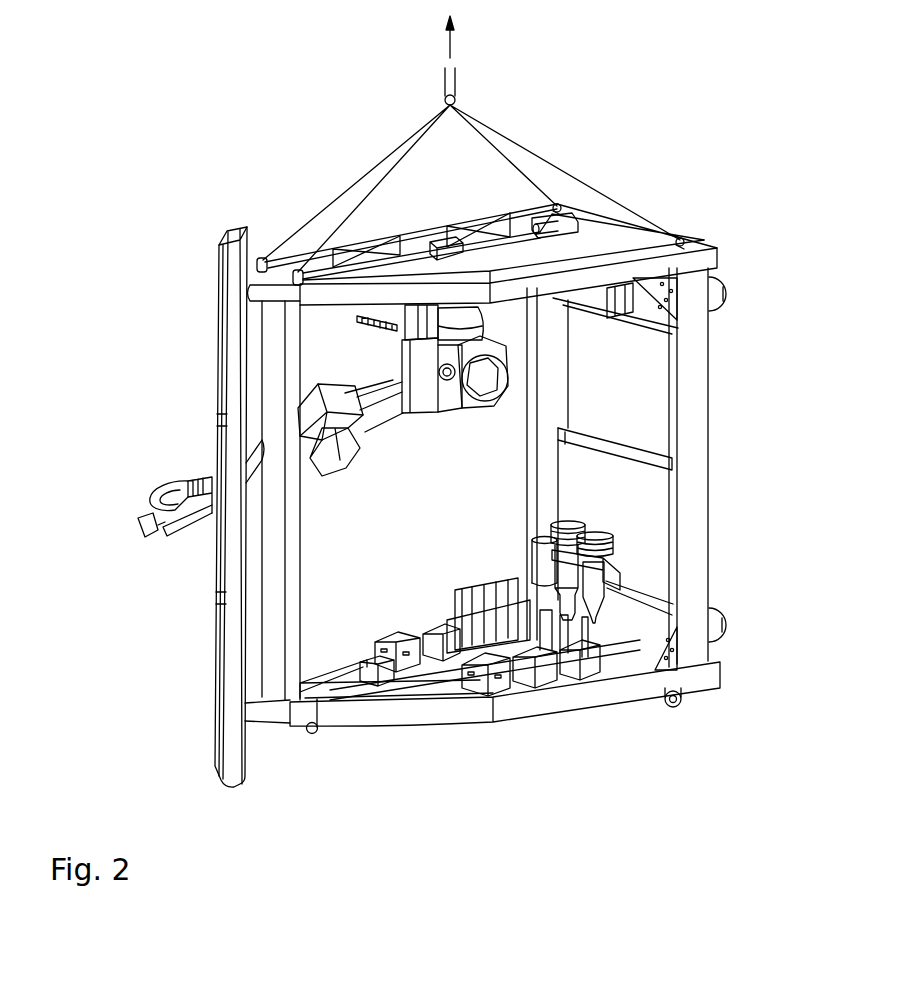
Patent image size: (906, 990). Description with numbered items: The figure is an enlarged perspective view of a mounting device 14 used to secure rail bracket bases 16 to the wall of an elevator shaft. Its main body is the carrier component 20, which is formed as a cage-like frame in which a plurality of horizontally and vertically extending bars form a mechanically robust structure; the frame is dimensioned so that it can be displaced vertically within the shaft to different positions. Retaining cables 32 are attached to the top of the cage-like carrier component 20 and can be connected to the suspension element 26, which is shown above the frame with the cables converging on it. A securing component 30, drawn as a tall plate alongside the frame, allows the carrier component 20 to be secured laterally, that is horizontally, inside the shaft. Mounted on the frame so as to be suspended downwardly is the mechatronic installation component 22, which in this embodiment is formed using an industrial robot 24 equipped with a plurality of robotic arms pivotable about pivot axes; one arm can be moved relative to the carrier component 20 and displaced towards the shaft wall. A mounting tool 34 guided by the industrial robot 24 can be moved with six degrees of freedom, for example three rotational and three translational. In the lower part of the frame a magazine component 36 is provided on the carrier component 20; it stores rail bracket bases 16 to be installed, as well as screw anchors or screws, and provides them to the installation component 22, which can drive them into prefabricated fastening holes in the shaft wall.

The mounting device 14 is at (246, 185).
The rail bracket bases 16 is at (397, 630).
The carrier component 20 is at (698, 262).
The mechatronic installation component 22 is at (330, 370).
The industrial robot 24 is at (300, 398).
The suspension element 26 is at (458, 84).
The securing component 30 is at (222, 660).
The retaining cables 32 is at (601, 196).
The mounting tool 34 is at (562, 527).
The magazine component 36 is at (434, 598).